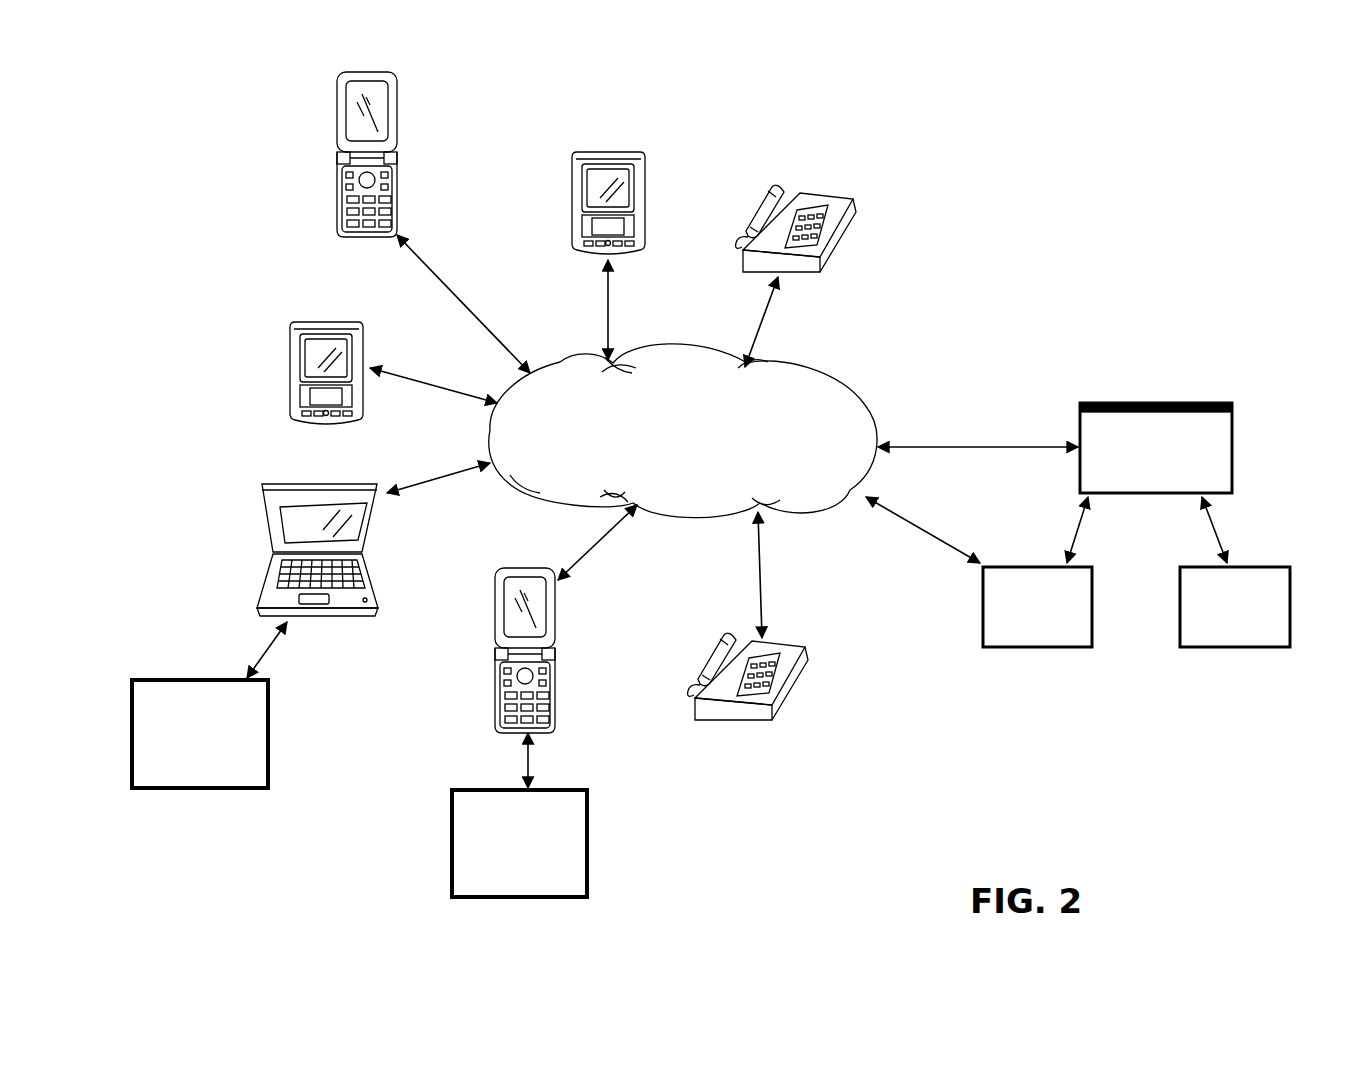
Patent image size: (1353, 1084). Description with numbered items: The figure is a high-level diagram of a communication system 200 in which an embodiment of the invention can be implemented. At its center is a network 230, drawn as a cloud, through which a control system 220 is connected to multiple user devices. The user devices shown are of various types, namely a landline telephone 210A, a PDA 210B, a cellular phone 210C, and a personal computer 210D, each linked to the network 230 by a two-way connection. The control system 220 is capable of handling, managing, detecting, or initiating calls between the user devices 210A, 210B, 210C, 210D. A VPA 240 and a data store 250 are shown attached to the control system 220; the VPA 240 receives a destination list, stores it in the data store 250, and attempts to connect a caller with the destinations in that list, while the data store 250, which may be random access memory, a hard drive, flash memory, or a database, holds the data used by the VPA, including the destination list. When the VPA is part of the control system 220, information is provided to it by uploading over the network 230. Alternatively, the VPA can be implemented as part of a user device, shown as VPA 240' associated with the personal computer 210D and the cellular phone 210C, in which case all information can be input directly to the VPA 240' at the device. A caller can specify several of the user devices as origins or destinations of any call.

The communication system 200 is at (1113, 190).
The landline telephone 210A is at (762, 195).
The PDA 210B is at (583, 176).
The cellular phone 210C is at (357, 127).
The personal computer 210D is at (287, 510).
The control system 220 is at (1105, 433).
The network 230 is at (777, 427).
The VPA 240 is at (1003, 607).
The VPA implemented in a user device 240' is at (352, 763).
The data store 250 is at (1255, 578).